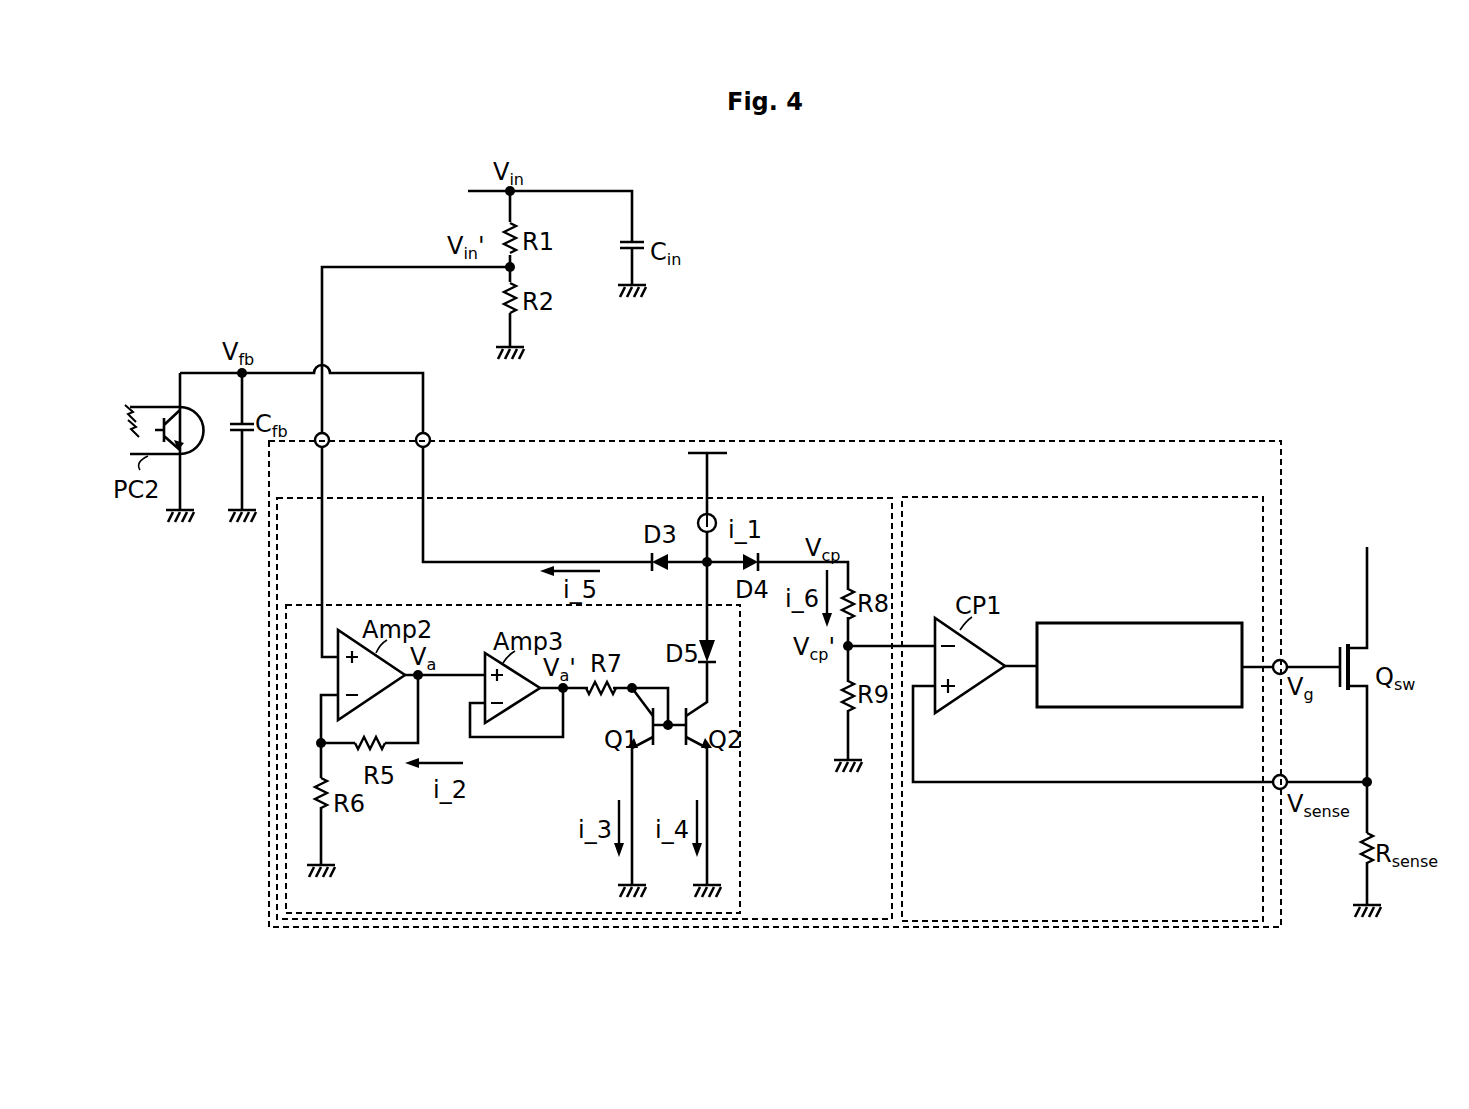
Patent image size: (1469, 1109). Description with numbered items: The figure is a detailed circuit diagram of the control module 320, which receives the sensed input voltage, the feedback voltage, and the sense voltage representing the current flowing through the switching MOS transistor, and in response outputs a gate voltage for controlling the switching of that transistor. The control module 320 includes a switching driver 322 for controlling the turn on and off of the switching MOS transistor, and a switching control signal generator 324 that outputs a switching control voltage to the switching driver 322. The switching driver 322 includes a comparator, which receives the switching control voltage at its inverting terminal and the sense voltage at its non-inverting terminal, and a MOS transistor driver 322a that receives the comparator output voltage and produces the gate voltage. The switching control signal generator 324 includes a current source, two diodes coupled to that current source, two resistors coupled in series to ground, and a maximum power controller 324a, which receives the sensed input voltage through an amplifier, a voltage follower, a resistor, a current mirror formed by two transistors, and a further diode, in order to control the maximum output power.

The control module 320 is at (1205, 428).
The switching driver 322 is at (1182, 483).
The MOS transistor driver 322a is at (1177, 613).
The switching control signal generator 324 is at (877, 483).
The maximum power controller 324a is at (740, 843).